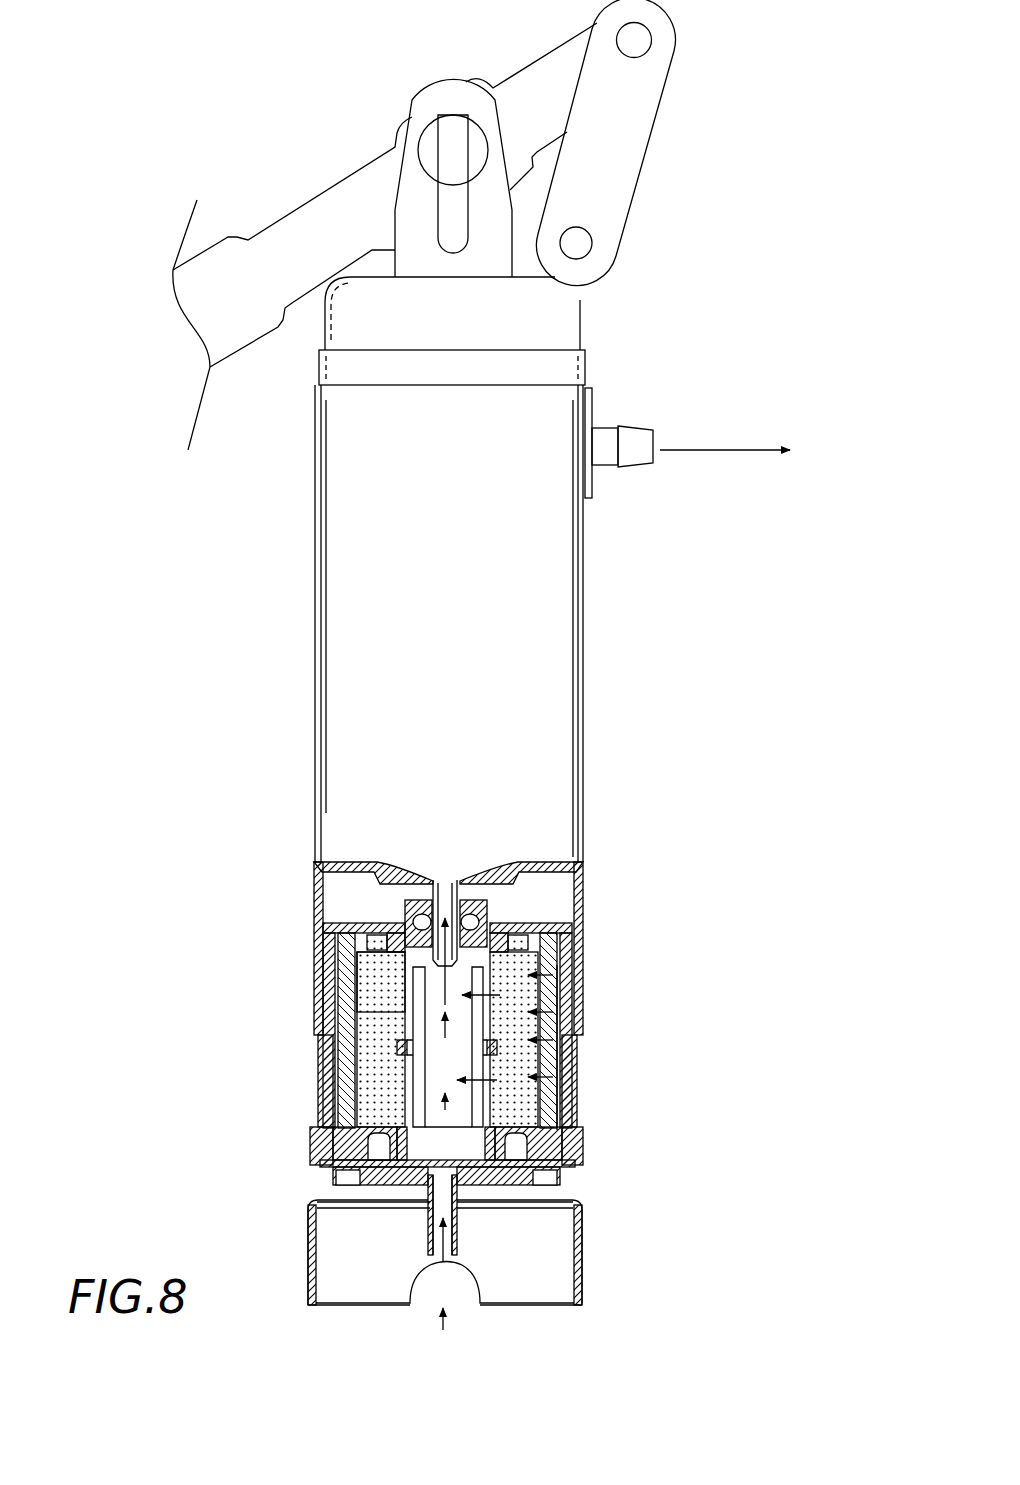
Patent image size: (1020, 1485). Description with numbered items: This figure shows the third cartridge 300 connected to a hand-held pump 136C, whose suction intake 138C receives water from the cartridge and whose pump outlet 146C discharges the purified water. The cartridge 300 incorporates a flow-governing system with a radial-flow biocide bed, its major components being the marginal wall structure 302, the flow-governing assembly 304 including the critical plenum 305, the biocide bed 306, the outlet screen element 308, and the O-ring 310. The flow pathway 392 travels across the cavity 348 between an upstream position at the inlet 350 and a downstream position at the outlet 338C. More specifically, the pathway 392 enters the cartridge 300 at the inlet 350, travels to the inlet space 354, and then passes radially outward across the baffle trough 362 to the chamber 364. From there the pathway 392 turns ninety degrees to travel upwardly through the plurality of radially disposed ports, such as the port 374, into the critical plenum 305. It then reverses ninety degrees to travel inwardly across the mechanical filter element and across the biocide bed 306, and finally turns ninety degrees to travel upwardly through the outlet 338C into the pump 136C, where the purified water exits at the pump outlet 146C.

The hand-held pump 136C is at (540, 734).
The pump outlet 146C is at (628, 435).
The suction intake 138C is at (426, 877).
The outlet 338C is at (430, 880).
The O-ring 310 is at (518, 910).
The marginal wall structure 302 is at (318, 1038).
The critical plenum 305 is at (322, 1000).
The flow-governing assembly 304 is at (337, 1070).
The biocide bed 306 is at (373, 1087).
The cavity 348 is at (373, 985).
The outlet screen element 308 is at (418, 1087).
The port 374 is at (562, 1113).
The third cartridge 300 is at (306, 1168).
The chamber 364 is at (580, 1167).
The inlet space 354 is at (472, 1187).
The baffle trough 362 is at (508, 1180).
The inlet 350 is at (428, 1243).
The flow pathway 392 is at (745, 452).